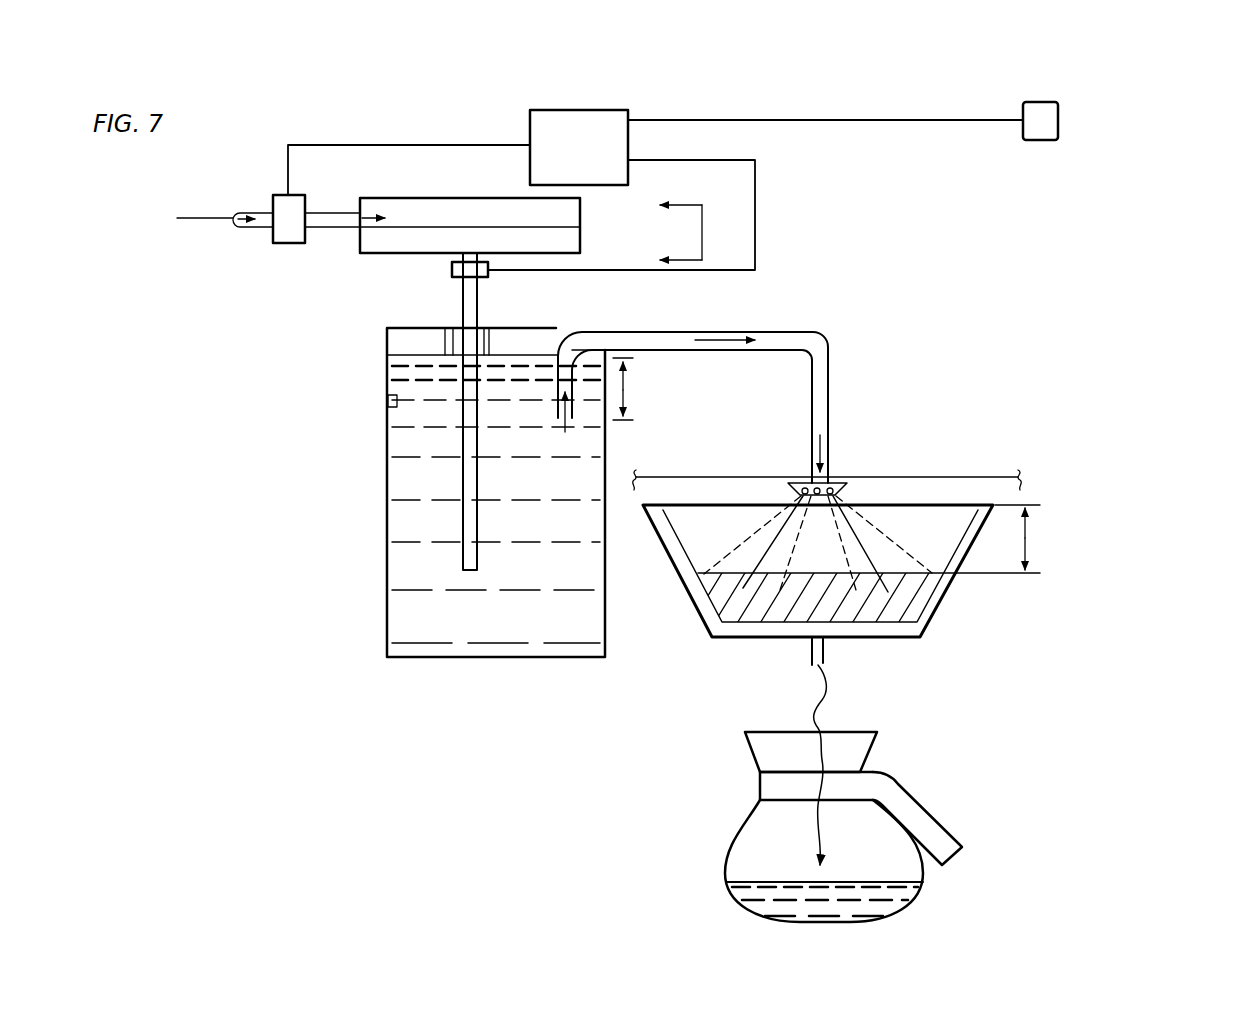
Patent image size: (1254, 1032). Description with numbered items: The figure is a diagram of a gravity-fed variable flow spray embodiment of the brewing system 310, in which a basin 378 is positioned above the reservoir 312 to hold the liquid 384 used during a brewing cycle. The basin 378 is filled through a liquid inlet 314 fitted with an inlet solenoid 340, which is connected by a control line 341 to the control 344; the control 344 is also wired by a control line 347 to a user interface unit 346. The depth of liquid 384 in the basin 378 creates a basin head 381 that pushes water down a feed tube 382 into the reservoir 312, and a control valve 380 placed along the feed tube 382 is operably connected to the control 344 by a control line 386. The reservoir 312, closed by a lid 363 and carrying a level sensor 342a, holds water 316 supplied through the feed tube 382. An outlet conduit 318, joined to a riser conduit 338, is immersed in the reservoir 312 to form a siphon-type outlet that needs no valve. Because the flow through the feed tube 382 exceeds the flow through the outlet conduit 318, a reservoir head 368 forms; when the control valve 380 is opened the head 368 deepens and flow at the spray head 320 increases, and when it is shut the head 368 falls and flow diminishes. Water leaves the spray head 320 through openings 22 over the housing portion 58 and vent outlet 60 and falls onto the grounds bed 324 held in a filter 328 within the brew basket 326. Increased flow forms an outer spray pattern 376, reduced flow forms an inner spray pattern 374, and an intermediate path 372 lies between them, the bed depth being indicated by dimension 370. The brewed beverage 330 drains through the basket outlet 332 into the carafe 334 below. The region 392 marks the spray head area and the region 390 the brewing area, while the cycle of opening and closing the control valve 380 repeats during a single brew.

The brewing system 310 is at (1106, 250).
The reservoir 312 is at (526, 658).
The liquid inlet 314 is at (241, 228).
The water 316 is at (473, 615).
The outlet conduit 318 is at (783, 349).
The spray head 320 is at (785, 488).
The openings 22 is at (818, 498).
The housing portion 58 is at (965, 484).
The outlet of the vent line 60 is at (885, 485).
The coffee grounds bed 324 is at (767, 607).
The brew basket 326 is at (700, 613).
The filter 328 is at (714, 608).
The brewed beverage stream 330 is at (812, 722).
The basket outlet 332 is at (827, 651).
The carafe 334 is at (733, 853).
The riser conduit 338 is at (604, 334).
The inlet solenoid 340 is at (283, 244).
The control line 341 is at (350, 145).
The level sensor 342a is at (388, 401).
The control 344 is at (576, 110).
The user interface 346 is at (1059, 118).
The interface control line 347 is at (968, 121).
The reservoir lid 363 is at (511, 353).
The reservoir head 368 is at (626, 392).
The bed depth dimension 370 is at (903, 543).
The flow path 372 is at (917, 565).
The inner spray pattern 374 is at (851, 556).
The outer spray pattern 376 is at (875, 568).
The basin 378 is at (581, 245).
The control valve 380 is at (452, 270).
The basin head 381 is at (703, 222).
The feed tube 382 is at (455, 310).
The liquid 384 is at (427, 245).
The control line 386 is at (756, 233).
The brewing region 390 is at (1122, 590).
The sprayhead region 392 is at (1000, 395).